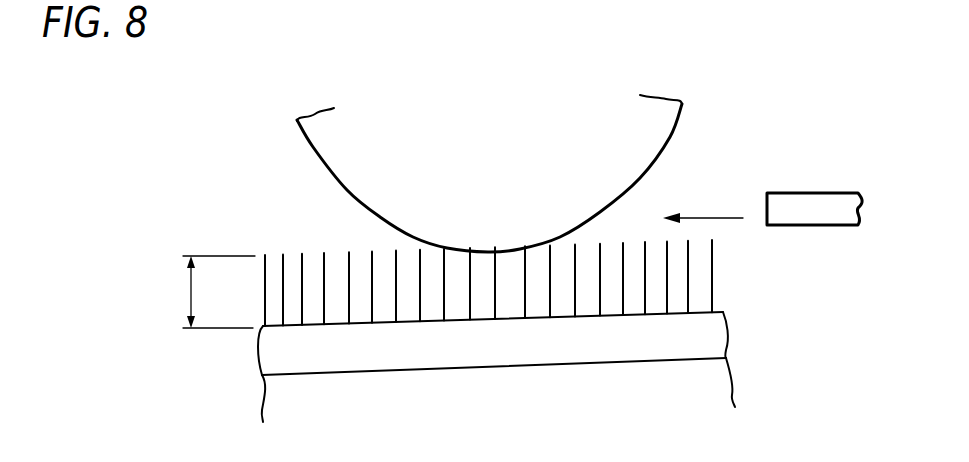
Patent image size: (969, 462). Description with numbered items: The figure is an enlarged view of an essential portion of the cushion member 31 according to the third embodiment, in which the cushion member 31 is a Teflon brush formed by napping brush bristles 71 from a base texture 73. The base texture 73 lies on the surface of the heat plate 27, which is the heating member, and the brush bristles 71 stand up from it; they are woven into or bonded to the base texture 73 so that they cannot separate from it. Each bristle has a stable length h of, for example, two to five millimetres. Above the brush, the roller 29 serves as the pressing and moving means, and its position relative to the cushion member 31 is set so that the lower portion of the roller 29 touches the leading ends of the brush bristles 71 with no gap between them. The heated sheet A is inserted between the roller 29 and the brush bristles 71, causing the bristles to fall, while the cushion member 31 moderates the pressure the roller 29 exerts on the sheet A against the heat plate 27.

The roller 29 is at (679, 143).
The cushion member 31 is at (564, 331).
The brush bristles 71 is at (712, 264).
The base texture 73 is at (710, 335).
The heat plate 27 is at (722, 391).
The sheet A is at (827, 193).
The length of brush bristles h is at (219, 292).